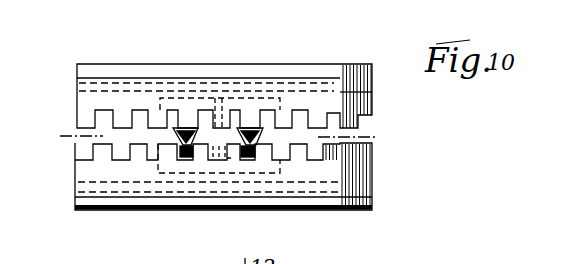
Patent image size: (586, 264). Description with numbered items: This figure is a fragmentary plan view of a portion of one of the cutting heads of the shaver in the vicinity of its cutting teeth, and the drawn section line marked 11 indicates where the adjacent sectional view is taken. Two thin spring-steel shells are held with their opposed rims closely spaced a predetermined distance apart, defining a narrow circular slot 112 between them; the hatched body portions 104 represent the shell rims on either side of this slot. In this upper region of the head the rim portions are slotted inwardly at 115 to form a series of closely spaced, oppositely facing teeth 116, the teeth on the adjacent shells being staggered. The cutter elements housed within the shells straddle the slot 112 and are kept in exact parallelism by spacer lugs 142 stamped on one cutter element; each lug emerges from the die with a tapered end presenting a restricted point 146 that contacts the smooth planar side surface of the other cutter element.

The body half (mold section) 104 is at (311, 98).
The restricted point 146 is at (185, 130).
The spacer lugs 142 is at (250, 127).
The circular slot 112 is at (294, 132).
The teeth 116 is at (102, 152).
The slots 115 is at (152, 153).
The section line 11- 11 is at (50, 113).